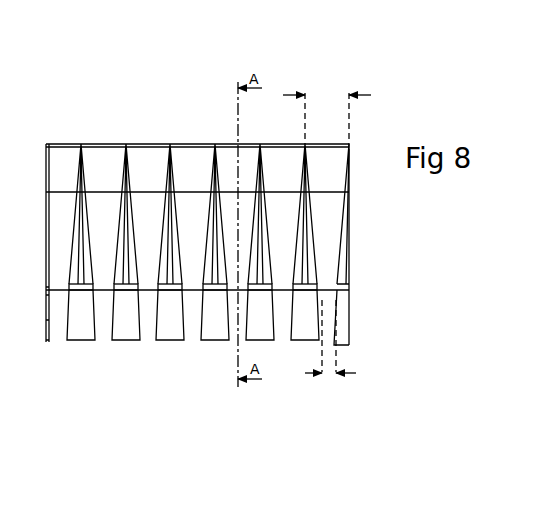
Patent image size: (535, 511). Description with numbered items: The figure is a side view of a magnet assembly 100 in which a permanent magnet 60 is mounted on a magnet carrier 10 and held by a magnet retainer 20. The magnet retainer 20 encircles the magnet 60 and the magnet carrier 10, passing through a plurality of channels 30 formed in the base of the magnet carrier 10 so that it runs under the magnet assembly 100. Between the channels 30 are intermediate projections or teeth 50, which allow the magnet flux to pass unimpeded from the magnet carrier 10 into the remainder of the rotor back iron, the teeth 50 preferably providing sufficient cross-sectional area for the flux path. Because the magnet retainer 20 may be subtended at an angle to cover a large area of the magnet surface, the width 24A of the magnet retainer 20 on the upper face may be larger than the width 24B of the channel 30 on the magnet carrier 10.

The magnet assembly 100 is at (229, 227).
The magnet retainer 20 is at (63, 160).
The permanent magnet 60 is at (302, 266).
The magnet carrier 10 is at (303, 315).
The teeth 50 is at (172, 333).
The channel 30 is at (104, 327).
The width of the magnet retainer 24A is at (327, 101).
The width of the channel 24B is at (330, 357).